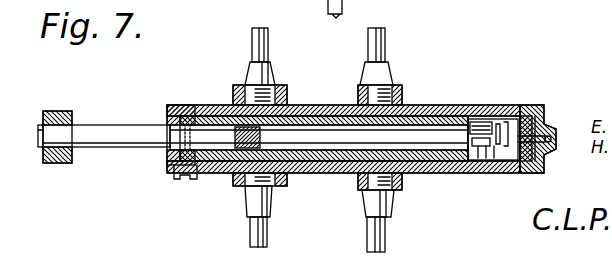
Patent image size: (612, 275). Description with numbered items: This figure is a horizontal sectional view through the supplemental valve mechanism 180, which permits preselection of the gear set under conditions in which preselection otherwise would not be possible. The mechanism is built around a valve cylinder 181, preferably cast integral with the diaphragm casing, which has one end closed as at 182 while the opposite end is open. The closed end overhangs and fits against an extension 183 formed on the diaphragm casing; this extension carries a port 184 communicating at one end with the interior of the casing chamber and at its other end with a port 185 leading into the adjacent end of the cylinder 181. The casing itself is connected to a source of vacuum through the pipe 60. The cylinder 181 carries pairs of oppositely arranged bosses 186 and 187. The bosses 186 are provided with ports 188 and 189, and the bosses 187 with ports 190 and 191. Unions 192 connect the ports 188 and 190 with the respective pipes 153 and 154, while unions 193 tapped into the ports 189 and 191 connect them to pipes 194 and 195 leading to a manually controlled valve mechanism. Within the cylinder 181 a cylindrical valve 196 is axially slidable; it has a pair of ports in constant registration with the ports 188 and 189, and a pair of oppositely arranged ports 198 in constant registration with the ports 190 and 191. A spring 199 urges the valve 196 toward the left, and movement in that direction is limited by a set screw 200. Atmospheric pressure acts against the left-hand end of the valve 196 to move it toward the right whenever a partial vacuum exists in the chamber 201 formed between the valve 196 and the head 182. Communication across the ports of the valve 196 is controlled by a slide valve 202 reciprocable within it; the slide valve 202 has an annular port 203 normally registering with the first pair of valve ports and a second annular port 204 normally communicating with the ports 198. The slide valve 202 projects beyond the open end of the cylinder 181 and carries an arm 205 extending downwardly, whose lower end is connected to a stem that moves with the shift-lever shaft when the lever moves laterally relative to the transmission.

The pipe 60 is at (345, 12).
The pipe 153 is at (385, 37).
The pipe 154 is at (266, 41).
The supplemental valve mechanism 180 is at (497, 107).
The valve cylinder 181 is at (463, 107).
The closed end 182 is at (538, 113).
The extension 183 is at (546, 154).
The port 184 is at (552, 135).
The port 185 is at (523, 174).
The bosses 186 is at (356, 97).
The bosses 187 is at (286, 96).
The port 188 is at (402, 101).
The port 189 is at (300, 201).
The port 190 is at (253, 77).
The port 191 is at (296, 195).
The unions 192 is at (256, 53).
The unions 193 is at (250, 209).
The pipe 194 is at (386, 231).
The pipe 195 is at (250, 227).
The cylindrical valve 196 is at (190, 105).
The ports 198 is at (212, 119).
The spring 199 is at (530, 107).
The set screw 200 is at (180, 180).
The chamber 201 is at (489, 165).
The slide valve 202 is at (104, 148).
The annular port 203 is at (319, 137).
The annular port 204 is at (226, 137).
The arm 205 is at (58, 164).